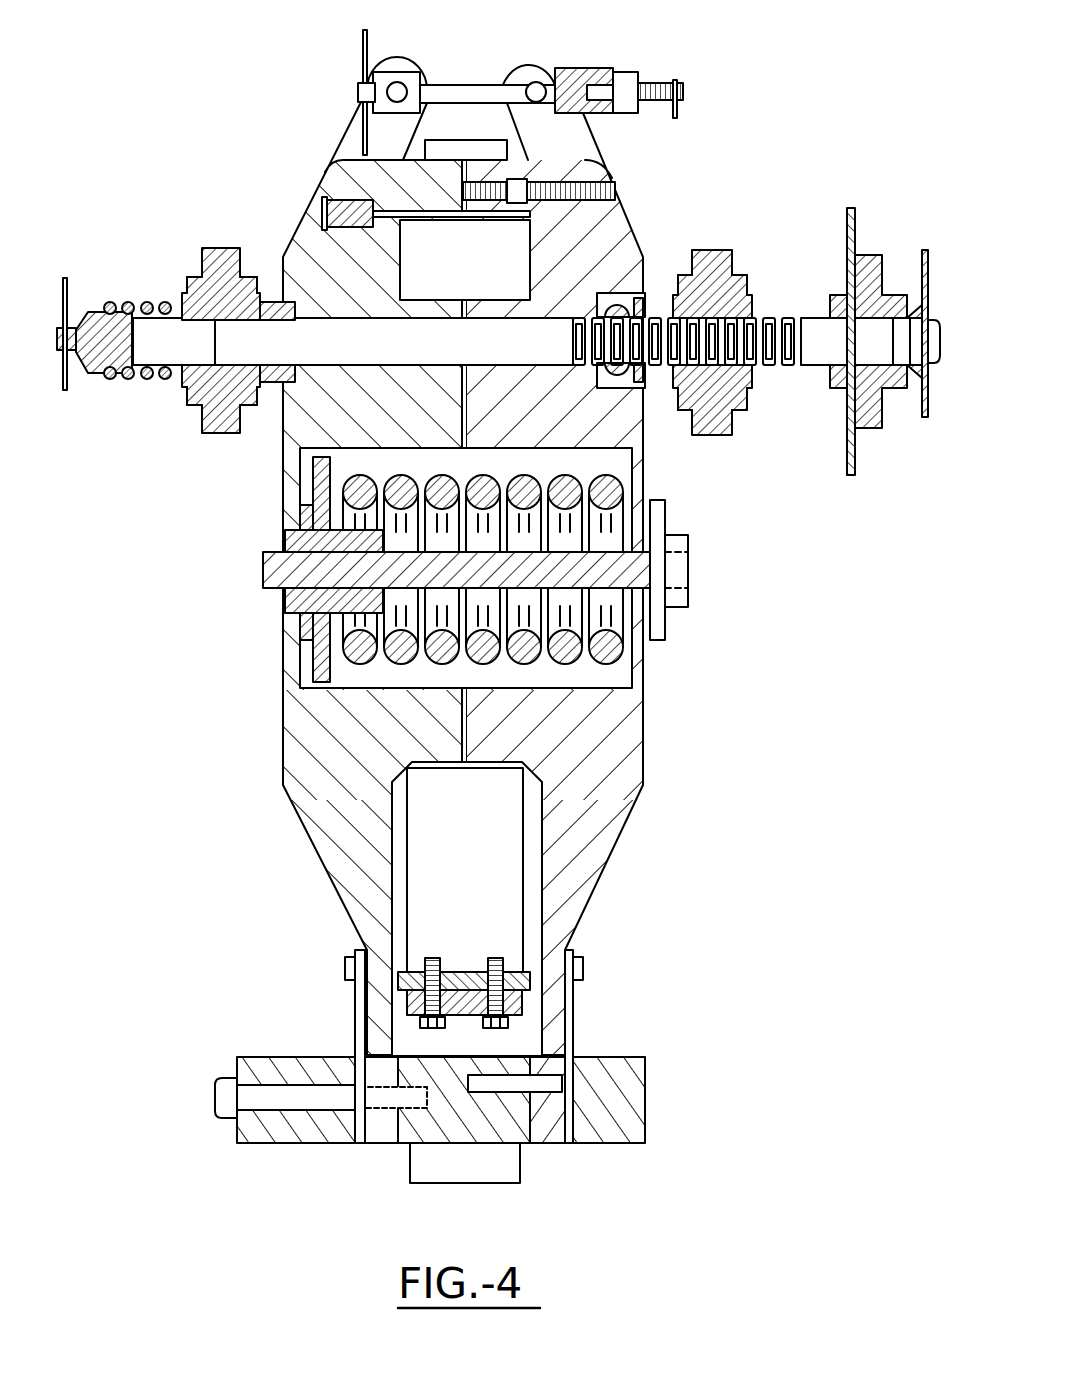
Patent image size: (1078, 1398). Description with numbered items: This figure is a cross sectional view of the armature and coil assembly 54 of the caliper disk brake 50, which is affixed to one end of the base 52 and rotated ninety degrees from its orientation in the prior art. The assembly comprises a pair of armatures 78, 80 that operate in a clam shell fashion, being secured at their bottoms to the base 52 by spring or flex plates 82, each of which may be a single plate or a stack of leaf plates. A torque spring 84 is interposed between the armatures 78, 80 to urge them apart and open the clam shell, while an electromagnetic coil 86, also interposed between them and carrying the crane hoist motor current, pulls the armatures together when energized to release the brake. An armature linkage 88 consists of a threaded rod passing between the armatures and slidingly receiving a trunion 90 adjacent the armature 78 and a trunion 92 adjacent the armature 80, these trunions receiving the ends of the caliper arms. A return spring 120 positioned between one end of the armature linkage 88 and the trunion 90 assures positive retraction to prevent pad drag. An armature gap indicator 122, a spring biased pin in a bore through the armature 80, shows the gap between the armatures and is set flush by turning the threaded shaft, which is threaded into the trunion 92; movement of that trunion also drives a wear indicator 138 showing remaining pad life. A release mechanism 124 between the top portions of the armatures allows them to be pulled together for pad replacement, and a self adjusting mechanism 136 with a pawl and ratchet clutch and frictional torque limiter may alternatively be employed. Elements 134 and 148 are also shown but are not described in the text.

The caliper disk brake 50 is at (855, 179).
The base 52 is at (410, 1130).
The armature and coil assembly 54 is at (657, 203).
The armature 78 is at (285, 748).
The armature 80 is at (645, 740).
The flex plates 82 is at (352, 1018).
The torque spring 84 is at (615, 647).
The electromagnetic coil 86 is at (500, 858).
The armature linkage 88 is at (337, 350).
The trunion 90 is at (212, 248).
The trunion 92 is at (753, 302).
The return spring 120 is at (148, 378).
The armature gap indicator 122 is at (299, 192).
The release mechanism 124 is at (423, 80).
The end plate 134 is at (918, 385).
The self adjusting mechanism 136 is at (873, 428).
The wear indicator 138 is at (753, 368).
The seal 148 is at (188, 280).